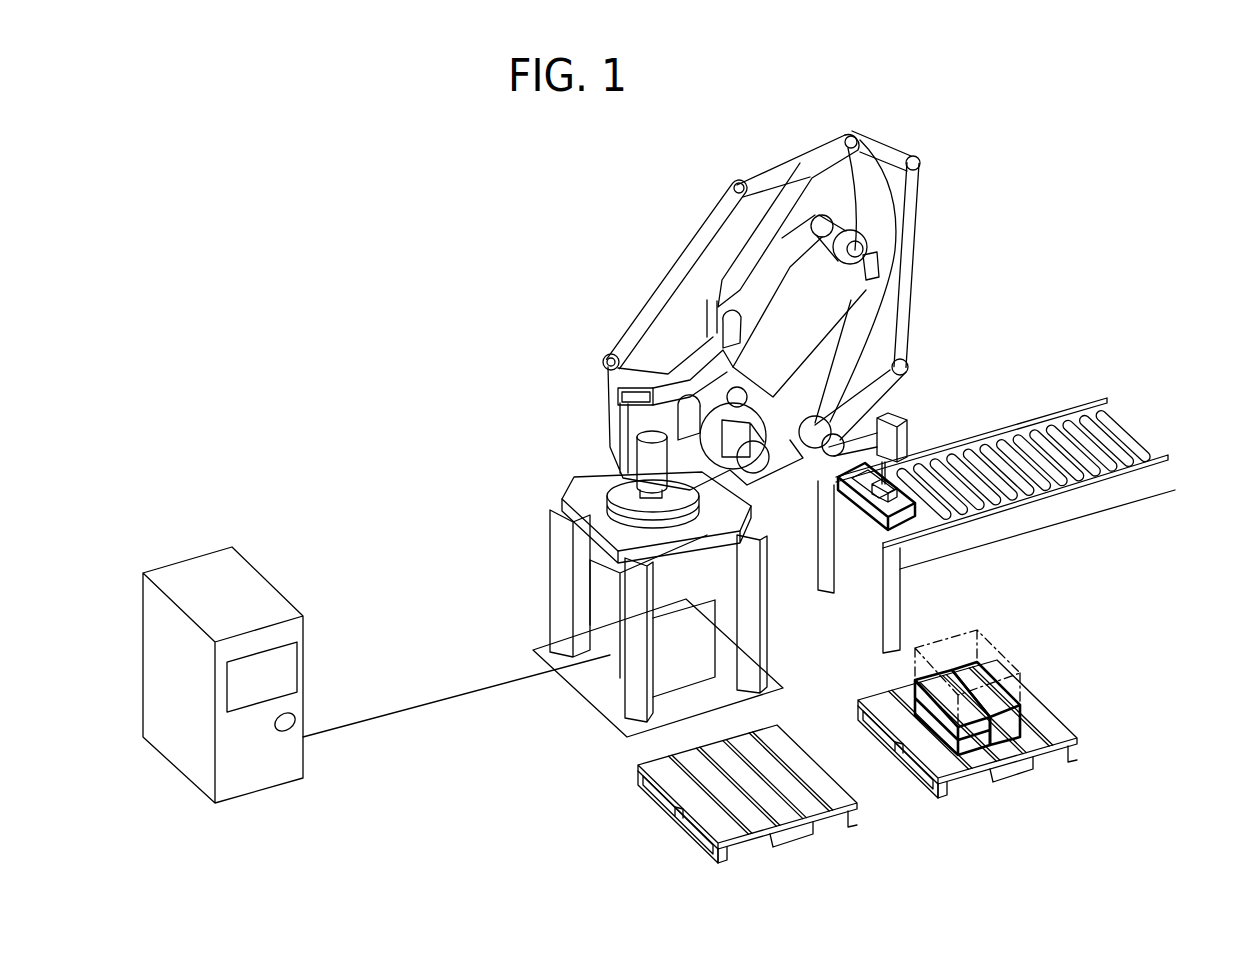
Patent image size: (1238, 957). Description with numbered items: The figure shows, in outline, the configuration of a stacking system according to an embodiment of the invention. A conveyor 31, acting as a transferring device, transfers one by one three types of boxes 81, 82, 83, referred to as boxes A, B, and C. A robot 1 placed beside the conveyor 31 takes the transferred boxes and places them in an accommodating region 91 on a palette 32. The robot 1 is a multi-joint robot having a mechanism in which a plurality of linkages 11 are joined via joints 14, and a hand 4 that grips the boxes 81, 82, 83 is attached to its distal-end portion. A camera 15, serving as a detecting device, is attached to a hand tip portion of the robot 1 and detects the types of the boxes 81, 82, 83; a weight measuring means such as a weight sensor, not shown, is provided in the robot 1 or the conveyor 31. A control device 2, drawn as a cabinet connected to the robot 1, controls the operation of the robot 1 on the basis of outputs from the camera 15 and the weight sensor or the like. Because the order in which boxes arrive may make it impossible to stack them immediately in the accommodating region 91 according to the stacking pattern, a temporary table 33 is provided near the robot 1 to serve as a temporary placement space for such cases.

The robot 1 is at (787, 172).
The control device 2 is at (203, 575).
The hand 4 is at (864, 493).
The linkage 11 is at (882, 296).
The joint 14 is at (866, 233).
The camera 15 is at (902, 446).
The conveyor 31 is at (1041, 412).
The palette 32 is at (1053, 730).
The temporary table 33 is at (655, 765).
The box 81 is at (1007, 730).
The box 82 is at (944, 733).
The box 83 is at (909, 517).
The accommodating region 91 is at (993, 642).